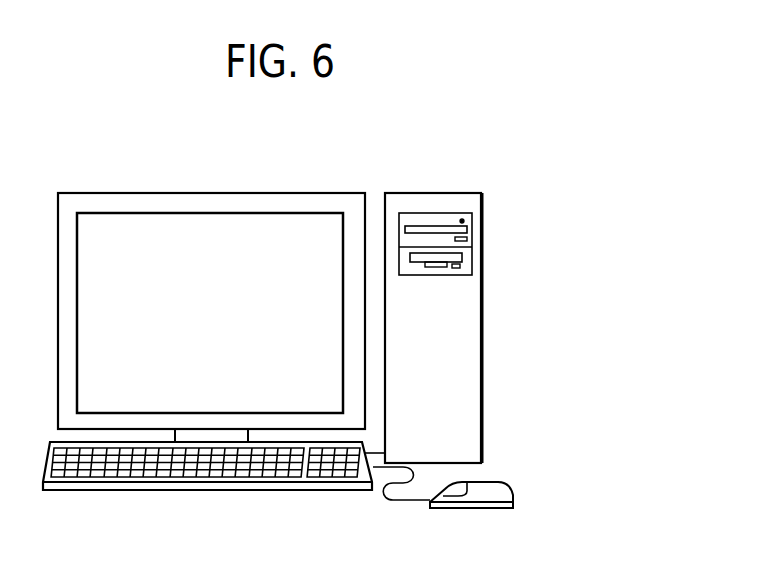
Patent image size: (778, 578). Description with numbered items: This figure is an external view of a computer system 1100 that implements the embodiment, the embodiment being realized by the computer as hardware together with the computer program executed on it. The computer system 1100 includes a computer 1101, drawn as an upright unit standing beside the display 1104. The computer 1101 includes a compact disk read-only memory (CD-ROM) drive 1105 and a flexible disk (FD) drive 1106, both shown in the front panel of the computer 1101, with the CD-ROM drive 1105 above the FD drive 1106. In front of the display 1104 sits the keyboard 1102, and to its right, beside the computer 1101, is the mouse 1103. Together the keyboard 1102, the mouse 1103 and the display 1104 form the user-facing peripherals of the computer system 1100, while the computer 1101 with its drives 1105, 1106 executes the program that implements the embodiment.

The computer system 1100 is at (553, 158).
The computer 1101 is at (433, 193).
The keyboard 1102 is at (72, 491).
The mouse 1103 is at (512, 489).
The display 1104 is at (278, 193).
The compact disk read-only memory (CD-ROM) drive 1105 is at (475, 229).
The flexible disk (FD) drive 1106 is at (475, 267).